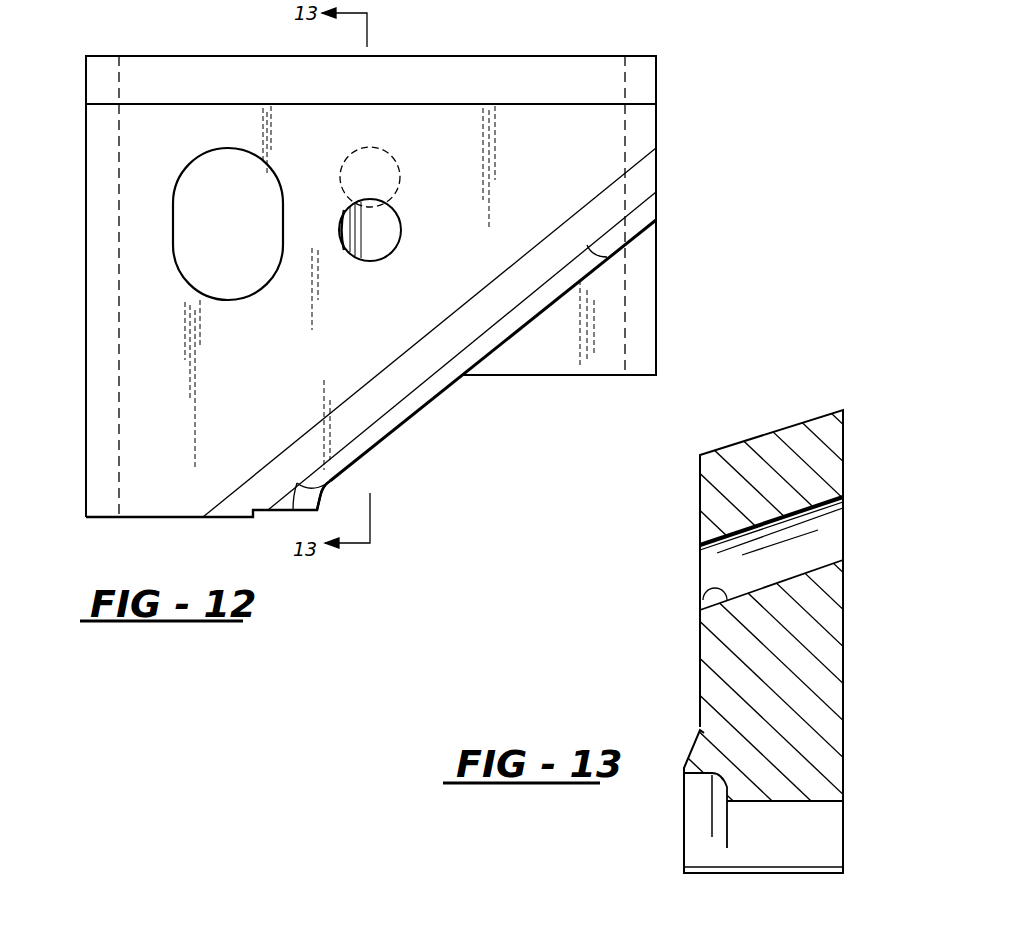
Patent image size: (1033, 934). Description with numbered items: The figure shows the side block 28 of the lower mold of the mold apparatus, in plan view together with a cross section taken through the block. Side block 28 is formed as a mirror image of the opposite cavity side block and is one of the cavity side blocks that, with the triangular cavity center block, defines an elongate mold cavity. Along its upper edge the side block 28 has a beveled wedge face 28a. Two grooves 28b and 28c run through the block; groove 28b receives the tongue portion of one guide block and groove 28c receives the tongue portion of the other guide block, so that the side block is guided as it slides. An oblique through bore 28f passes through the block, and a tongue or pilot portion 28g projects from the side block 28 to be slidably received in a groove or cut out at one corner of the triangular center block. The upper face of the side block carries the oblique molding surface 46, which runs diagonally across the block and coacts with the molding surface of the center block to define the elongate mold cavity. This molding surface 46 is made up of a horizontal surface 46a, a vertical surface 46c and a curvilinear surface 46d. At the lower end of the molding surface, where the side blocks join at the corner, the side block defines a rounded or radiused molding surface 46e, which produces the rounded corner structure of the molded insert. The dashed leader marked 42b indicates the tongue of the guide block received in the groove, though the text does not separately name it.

In FIG. 12, the side block 28 is at (226, 44).
In FIG. 13, the side block 28 is at (855, 738).
In FIG. 12, the beveled wedge face 28a is at (568, 88).
In FIG. 12, the groove 28b is at (119, 165).
In FIG. 12, the groove 28c is at (625, 120).
In FIG. 12, the oblique through bore 28f is at (384, 243).
In FIG. 13, the oblique through bore 28f is at (703, 600).
In FIG. 12, the tongue or pilot portion 28g is at (657, 322).
In FIG. 12, the bore 42b is at (119, 322).
In FIG. 12, the oblique molding surface 46 is at (547, 306).
In FIG. 12, the horizontal surface 46a is at (640, 219).
In FIG. 12, the vertical surface 46c is at (607, 257).
In FIG. 12, the curvilinear surface 46d is at (588, 217).
In FIG. 12, the rounded molding surface 46e is at (325, 490).